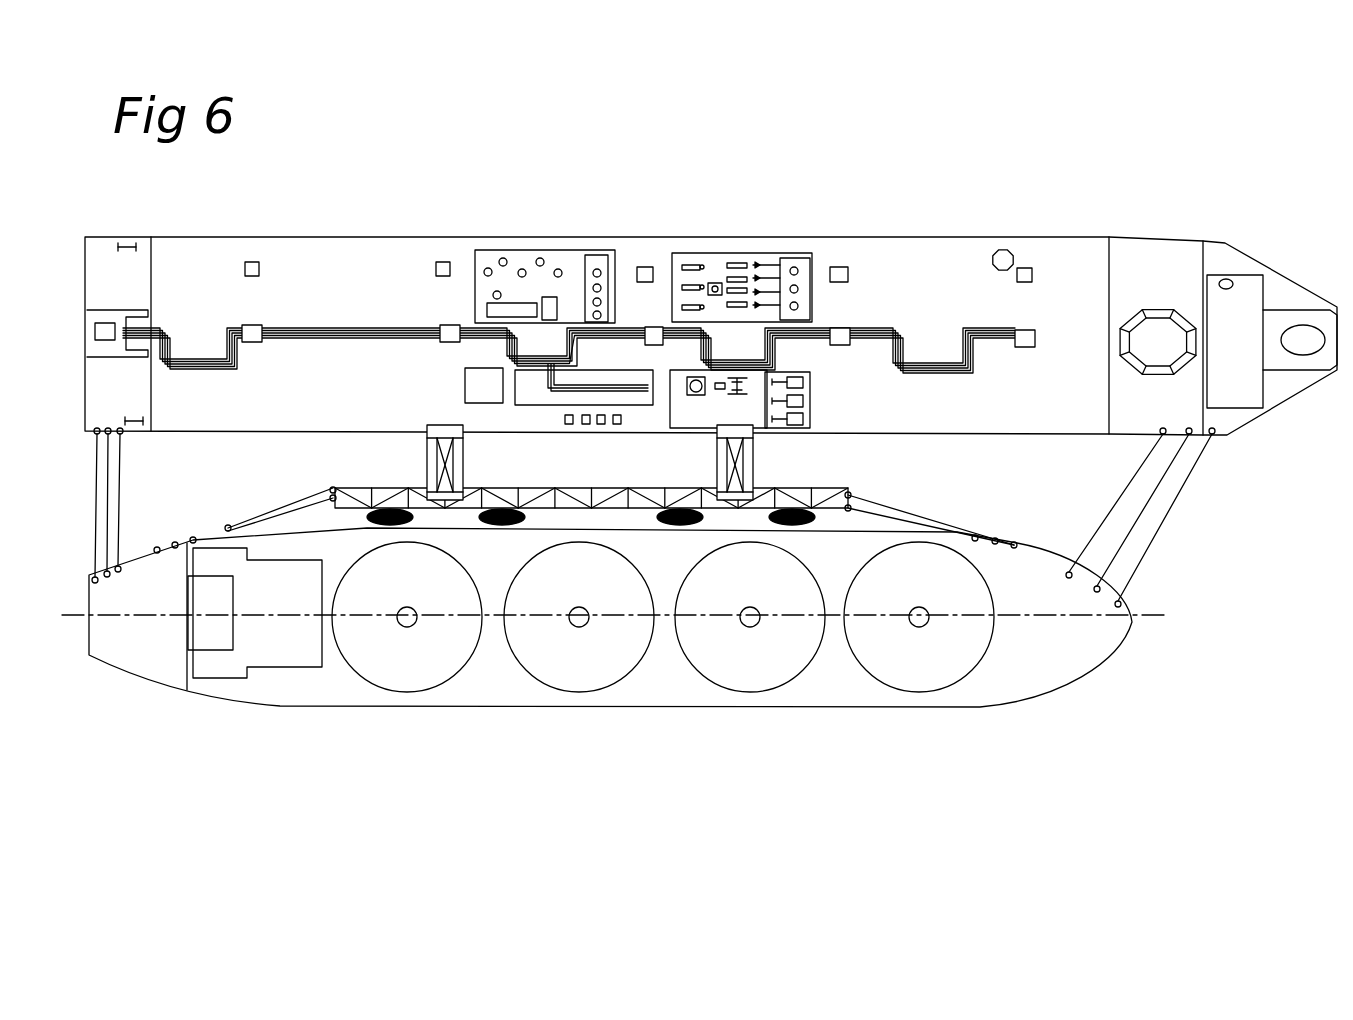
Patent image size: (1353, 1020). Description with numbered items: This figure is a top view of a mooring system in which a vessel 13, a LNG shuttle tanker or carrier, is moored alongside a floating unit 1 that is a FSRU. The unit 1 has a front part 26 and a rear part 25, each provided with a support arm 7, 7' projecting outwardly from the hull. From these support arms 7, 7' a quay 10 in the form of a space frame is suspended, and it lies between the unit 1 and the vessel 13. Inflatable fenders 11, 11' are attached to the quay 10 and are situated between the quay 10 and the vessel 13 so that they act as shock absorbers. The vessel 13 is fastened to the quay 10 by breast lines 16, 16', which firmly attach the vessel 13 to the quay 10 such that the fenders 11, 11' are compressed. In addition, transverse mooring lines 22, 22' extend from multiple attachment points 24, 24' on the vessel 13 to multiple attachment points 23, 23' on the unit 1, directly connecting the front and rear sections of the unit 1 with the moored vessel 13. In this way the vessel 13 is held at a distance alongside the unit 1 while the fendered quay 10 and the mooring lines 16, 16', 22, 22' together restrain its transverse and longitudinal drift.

The unit 1 is at (1066, 275).
The rear part 25 is at (214, 270).
The front part 26 is at (1228, 272).
The vessel 13 is at (333, 690).
The quay 10 is at (632, 489).
The support arm 7 is at (411, 462).
The support arm 7' is at (711, 462).
The fender 11 is at (449, 488).
The fender 11' is at (754, 488).
The breast line 16 is at (280, 493).
The breast line 16' is at (929, 506).
The transverse mooring line 22 is at (85, 505).
The transverse mooring line 22' is at (1151, 517).
The attachment point on the unit 23 is at (145, 466).
The attachment point on the unit 23' is at (1223, 467).
The attachment point on the vessel 24 is at (144, 638).
The attachment point on the vessel 24' is at (1046, 538).